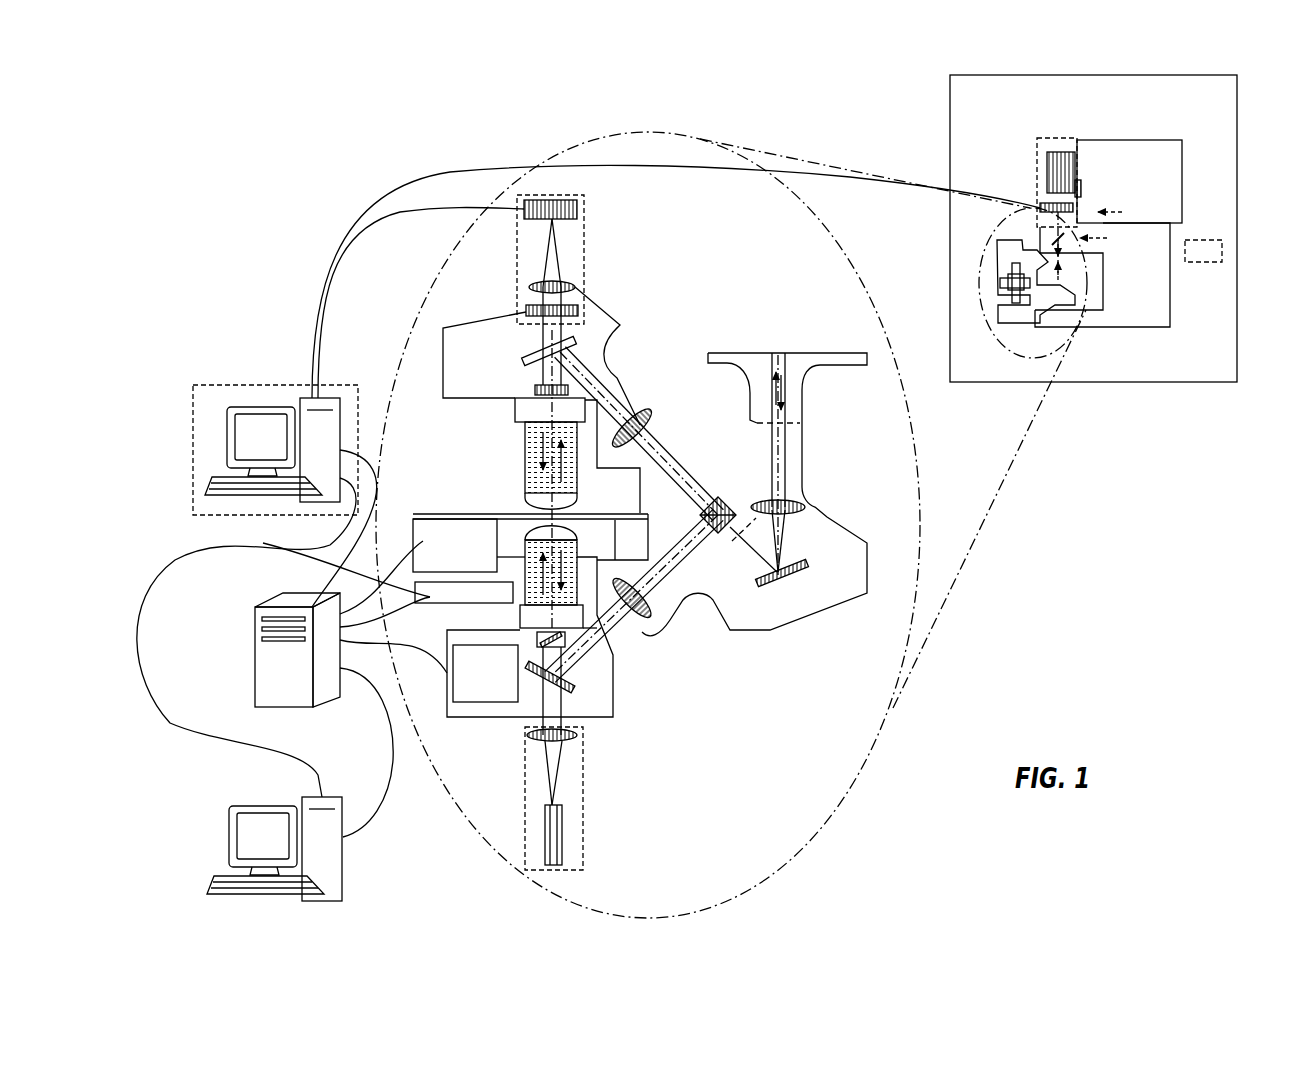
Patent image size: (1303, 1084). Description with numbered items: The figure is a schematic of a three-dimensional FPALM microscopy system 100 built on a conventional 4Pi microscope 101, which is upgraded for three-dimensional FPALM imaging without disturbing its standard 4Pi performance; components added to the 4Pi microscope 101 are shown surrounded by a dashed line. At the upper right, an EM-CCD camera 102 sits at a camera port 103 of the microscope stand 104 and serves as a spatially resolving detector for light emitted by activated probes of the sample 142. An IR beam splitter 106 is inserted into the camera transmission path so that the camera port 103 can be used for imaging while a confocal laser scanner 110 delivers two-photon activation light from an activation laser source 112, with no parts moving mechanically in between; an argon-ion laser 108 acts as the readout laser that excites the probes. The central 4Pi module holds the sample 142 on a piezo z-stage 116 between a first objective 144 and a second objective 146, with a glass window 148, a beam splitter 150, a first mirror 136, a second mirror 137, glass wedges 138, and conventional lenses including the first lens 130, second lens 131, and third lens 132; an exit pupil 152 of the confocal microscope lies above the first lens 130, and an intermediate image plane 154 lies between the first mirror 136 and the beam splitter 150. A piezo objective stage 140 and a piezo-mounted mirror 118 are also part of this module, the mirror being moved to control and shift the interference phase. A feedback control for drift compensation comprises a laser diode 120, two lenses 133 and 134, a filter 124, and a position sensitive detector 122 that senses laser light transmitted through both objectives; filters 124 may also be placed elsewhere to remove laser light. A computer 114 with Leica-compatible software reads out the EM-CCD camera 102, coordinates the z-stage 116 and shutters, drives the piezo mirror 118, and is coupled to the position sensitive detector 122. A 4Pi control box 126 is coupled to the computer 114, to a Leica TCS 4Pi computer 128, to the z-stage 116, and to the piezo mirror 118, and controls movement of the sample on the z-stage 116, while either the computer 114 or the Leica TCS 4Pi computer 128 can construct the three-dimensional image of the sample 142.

The 3D FPALM microscopy system 100 is at (366, 160).
The 4Pi microscope 101 is at (950, 101).
The EM-CCD camera 102 is at (1065, 152).
The camera port 103 is at (1068, 193).
The microscope stand 104 is at (1135, 281).
The IR beam splitter 106 is at (1040, 219).
The argon-ion laser 108 is at (1107, 238).
The confocal laser scanner 110 is at (1130, 190).
The 2PE activation laser source 112 is at (1122, 212).
The computer 114 is at (220, 413).
The z-stage 116 is at (423, 541).
The piezo-mounted mirror 118 is at (540, 681).
The laser diode 120 is at (556, 866).
The position sensitive detector 122 is at (552, 200).
The filter 124 is at (526, 310).
The 4Pi control box 126 is at (262, 650).
The Leica TCS 4Pi computer 128 is at (226, 813).
The first lens 130 is at (802, 505).
The second lens 131 is at (645, 415).
The third lens 132 is at (642, 606).
The lens 133 is at (530, 287).
The lens 134 is at (535, 739).
The first mirror 136 is at (800, 584).
The second mirror 137 is at (520, 362).
The glass wedges 138 is at (597, 698).
The piezo objective stage 140 is at (263, 543).
The sample 142 is at (515, 504).
The first objective 144 is at (537, 441).
The second objective 146 is at (540, 595).
The glass window 148 is at (526, 390).
The beam splitter 150 is at (722, 500).
The exit pupil 152 is at (755, 423).
The intermediate image plane 154 is at (731, 554).